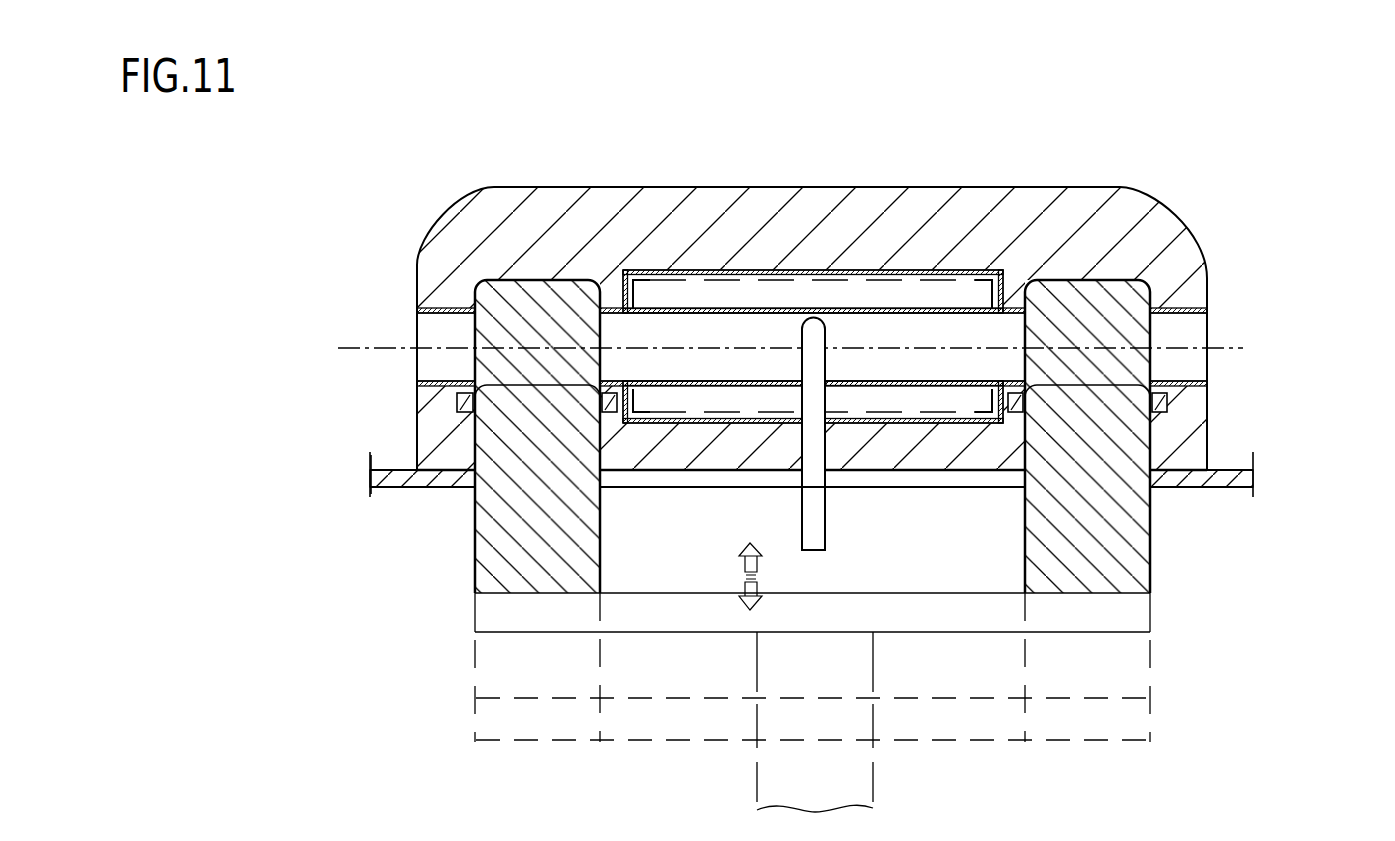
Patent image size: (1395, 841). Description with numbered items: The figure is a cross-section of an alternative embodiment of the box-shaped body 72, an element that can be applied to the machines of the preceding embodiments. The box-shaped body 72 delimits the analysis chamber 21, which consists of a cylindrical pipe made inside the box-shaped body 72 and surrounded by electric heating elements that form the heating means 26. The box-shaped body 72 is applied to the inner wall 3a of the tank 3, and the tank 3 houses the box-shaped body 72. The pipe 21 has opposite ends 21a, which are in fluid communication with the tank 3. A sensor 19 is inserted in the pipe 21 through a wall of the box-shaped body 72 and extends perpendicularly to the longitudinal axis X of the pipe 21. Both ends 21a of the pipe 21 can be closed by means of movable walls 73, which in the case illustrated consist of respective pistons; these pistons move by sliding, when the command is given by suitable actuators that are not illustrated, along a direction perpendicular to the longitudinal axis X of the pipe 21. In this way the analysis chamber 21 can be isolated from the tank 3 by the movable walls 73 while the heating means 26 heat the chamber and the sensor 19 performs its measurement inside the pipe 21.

The tank 3 is at (1231, 470).
The inner wall of the tank 3a is at (388, 468).
The sensor 19 is at (813, 335).
The analysis chamber 21 is at (962, 327).
The opposite ends of the pipe 21a is at (440, 332).
The heating means 26 is at (690, 283).
The box-shaped body 72 is at (1172, 203).
The movable walls 73 is at (490, 540).
The longitudinal axis X is at (1237, 349).